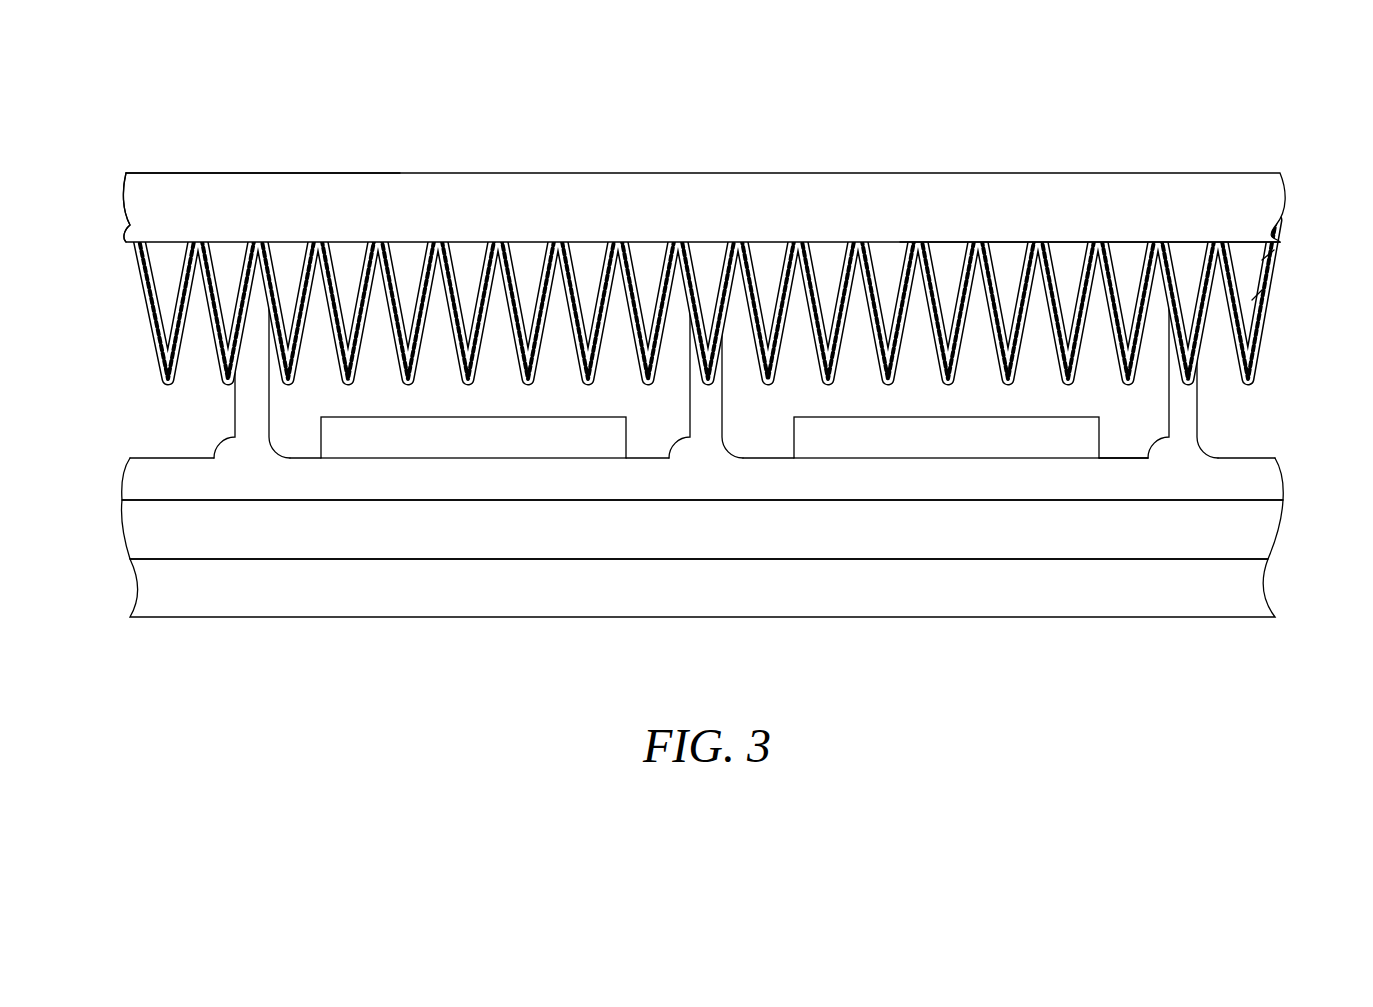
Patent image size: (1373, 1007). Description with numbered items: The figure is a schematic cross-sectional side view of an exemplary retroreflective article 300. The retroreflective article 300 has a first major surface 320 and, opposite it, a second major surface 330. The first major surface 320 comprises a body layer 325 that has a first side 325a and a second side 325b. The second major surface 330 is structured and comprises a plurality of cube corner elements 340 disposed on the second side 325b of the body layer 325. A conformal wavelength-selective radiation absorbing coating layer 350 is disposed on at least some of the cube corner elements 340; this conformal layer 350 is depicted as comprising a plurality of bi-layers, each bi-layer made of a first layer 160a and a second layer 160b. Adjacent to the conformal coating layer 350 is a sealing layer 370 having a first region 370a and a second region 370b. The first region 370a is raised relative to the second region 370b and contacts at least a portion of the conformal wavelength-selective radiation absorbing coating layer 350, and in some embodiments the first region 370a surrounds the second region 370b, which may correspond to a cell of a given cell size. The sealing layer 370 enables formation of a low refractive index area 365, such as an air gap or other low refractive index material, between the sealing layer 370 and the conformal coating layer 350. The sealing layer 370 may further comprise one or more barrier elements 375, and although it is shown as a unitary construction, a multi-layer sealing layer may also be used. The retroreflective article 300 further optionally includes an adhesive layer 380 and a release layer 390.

The retroreflective article 300 is at (1253, 103).
The first major surface 320 is at (725, 172).
The body layer 325 is at (150, 200).
The first side 325a is at (178, 172).
The second side 325b is at (1066, 241).
The second major surface 330 is at (702, 244).
The cube corner elements 340 is at (408, 258).
The conformal wavelength-selective radiation absorbing coating layer 350 is at (150, 314).
The first layer 160a is at (1278, 252).
The second layer 160b is at (1266, 298).
The low refractive index area 365 is at (293, 420).
The sealing layer 370 is at (142, 479).
The first region 370a is at (1197, 416).
The second region 370b is at (1137, 458).
The barrier elements 375 is at (473, 437).
The adhesive layer 380 is at (142, 532).
The release layer 390 is at (150, 587).